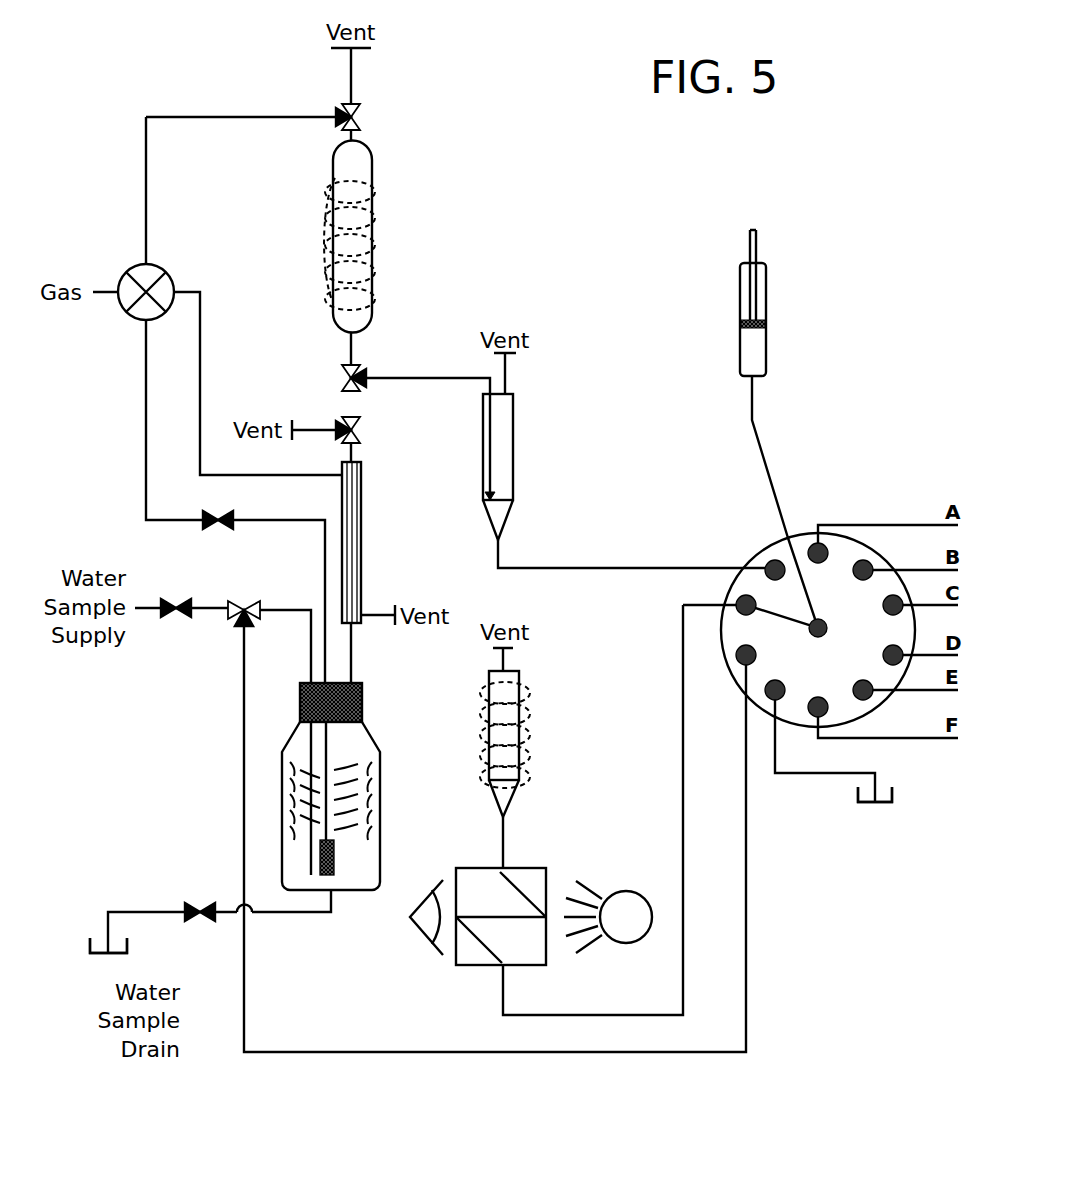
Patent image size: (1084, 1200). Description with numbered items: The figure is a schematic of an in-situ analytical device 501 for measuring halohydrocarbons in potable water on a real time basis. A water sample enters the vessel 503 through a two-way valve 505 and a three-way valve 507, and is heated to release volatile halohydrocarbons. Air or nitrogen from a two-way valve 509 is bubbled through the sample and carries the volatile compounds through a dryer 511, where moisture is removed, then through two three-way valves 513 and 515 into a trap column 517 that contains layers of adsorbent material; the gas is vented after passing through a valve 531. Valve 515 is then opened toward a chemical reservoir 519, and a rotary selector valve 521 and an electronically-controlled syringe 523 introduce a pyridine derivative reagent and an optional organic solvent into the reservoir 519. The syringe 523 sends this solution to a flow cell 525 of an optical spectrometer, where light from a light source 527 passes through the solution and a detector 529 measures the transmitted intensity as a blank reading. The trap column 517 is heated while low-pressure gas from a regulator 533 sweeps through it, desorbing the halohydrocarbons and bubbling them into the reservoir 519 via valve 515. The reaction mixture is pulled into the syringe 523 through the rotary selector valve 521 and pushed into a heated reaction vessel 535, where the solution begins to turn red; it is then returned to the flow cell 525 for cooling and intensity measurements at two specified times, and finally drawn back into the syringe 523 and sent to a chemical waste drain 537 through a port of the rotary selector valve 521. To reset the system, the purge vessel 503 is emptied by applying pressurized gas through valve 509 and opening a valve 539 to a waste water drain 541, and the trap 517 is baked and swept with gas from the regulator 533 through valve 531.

The in-situ analytical device 501 is at (830, 178).
The vessel 503 is at (380, 772).
The two-way valve 505 is at (175, 620).
The three-way valve 507 is at (250, 603).
The two-way valve 509 is at (210, 536).
The dryer 511 is at (366, 560).
The three-way valve 513 is at (360, 438).
The three-way valve 515 is at (360, 373).
The trap (column) 517 is at (372, 262).
The chemical reservoir 519 is at (513, 471).
The rotary selector valve 521 is at (800, 535).
The electronically-controlled syringe 523 is at (768, 345).
The flow cell 525 is at (540, 868).
The light source 527 is at (618, 945).
The detector 529 is at (428, 936).
The valve 531 is at (358, 112).
The regulator 533 is at (168, 278).
The heated reservoir or reaction vessel 535 is at (530, 756).
The chemical waste drain or container 537 is at (873, 805).
The valve 539 is at (205, 905).
The waste water drain 541 is at (107, 957).